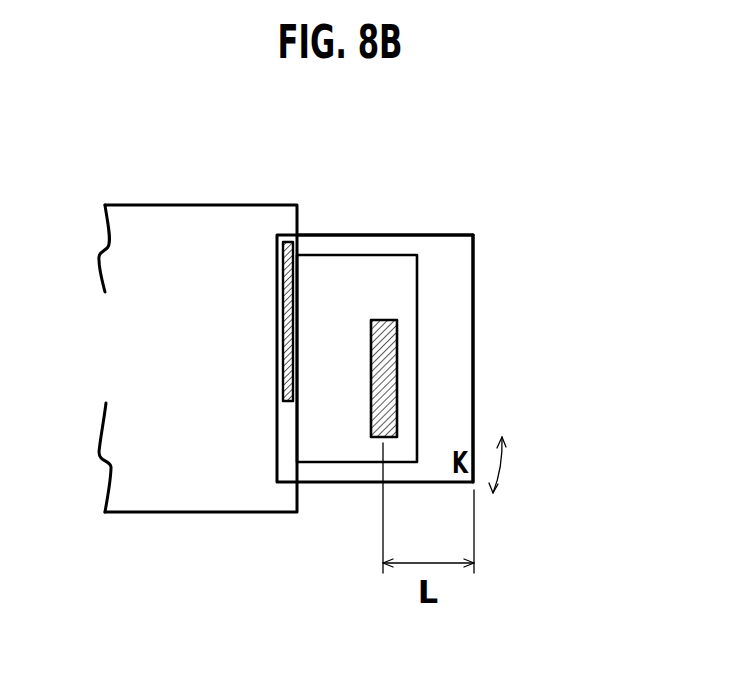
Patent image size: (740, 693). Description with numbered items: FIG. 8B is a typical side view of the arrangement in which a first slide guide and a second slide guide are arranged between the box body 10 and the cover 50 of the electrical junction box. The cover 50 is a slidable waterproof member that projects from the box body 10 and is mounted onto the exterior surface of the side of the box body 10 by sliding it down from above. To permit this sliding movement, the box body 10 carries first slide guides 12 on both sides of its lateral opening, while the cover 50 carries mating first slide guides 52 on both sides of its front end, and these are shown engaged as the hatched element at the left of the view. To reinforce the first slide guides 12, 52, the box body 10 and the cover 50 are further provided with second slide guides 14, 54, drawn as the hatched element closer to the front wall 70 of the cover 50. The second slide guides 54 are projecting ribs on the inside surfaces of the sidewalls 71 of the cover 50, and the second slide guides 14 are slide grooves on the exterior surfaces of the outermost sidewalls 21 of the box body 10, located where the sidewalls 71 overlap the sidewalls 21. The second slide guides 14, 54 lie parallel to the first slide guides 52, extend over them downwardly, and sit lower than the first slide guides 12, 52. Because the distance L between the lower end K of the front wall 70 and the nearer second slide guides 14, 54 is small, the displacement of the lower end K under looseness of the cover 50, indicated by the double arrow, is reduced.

The box body 10 is at (190, 205).
The first slide guide 12 is at (222, 321).
The second slide guide 14 is at (487, 378).
The sidewall 21 is at (417, 293).
The cover 50 is at (437, 235).
The first slide guide 52 is at (283, 290).
The second slide guide 54 is at (397, 343).
The front wall 70 is at (473, 400).
The sidewall 71 is at (337, 235).